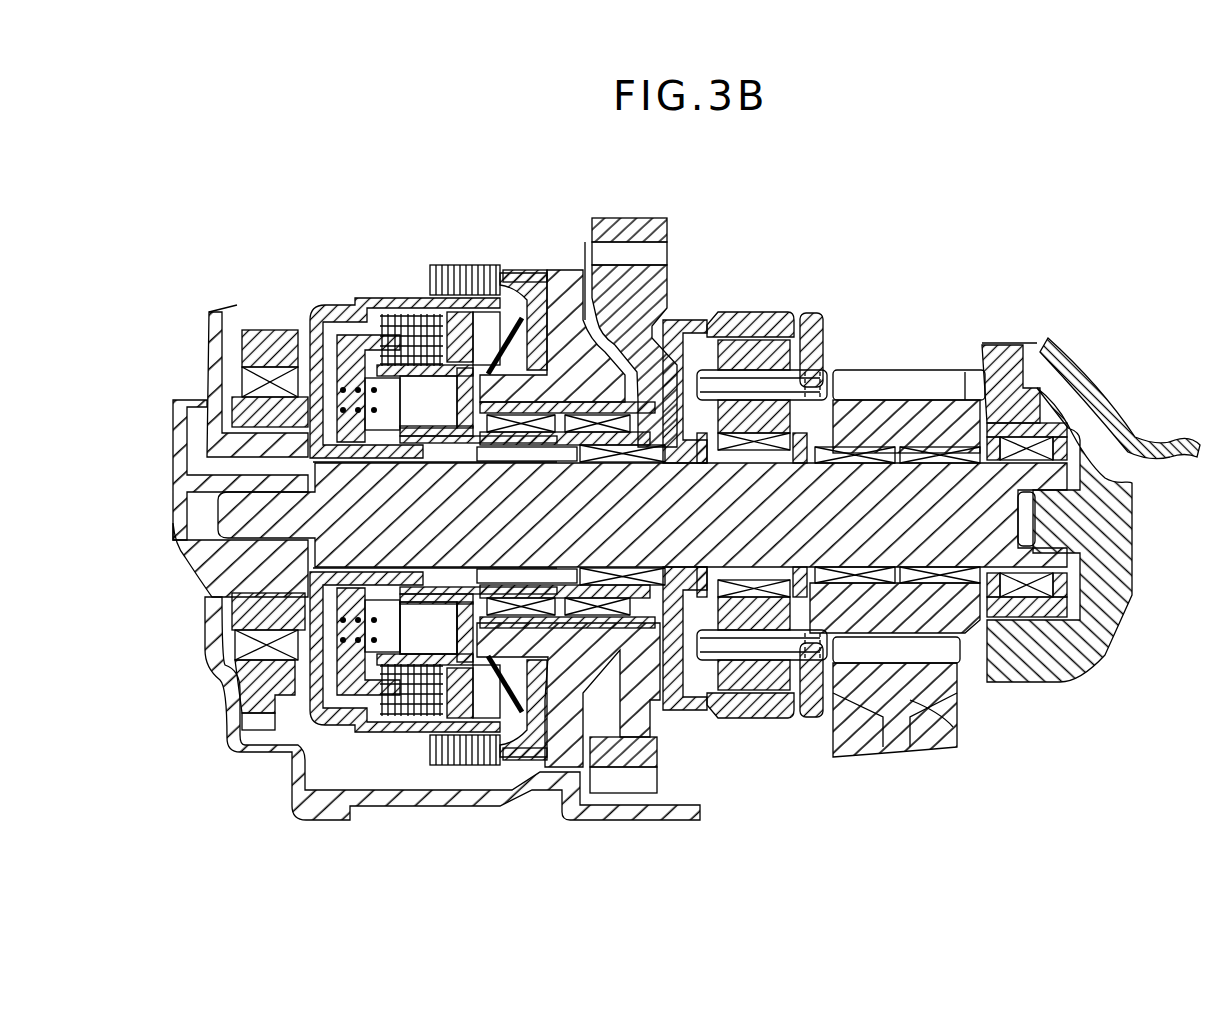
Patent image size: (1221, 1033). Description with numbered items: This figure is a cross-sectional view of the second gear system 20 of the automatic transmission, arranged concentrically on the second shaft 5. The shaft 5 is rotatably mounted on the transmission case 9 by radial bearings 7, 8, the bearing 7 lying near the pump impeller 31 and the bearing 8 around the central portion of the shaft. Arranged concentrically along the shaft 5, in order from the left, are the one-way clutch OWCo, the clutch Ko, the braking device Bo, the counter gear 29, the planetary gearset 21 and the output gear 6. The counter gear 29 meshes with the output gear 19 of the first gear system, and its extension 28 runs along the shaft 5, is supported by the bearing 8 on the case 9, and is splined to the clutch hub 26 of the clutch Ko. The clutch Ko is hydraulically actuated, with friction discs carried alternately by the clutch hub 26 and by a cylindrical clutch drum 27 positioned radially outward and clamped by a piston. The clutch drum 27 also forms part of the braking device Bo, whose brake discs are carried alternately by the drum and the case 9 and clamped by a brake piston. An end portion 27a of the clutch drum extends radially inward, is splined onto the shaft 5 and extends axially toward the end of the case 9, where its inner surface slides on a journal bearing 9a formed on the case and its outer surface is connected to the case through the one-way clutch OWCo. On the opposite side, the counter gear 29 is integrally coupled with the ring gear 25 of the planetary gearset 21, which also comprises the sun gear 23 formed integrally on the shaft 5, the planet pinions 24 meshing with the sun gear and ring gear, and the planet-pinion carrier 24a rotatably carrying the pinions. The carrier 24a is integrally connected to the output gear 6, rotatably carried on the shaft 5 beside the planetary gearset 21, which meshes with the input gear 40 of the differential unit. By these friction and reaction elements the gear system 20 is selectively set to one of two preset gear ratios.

The second rotatable shaft 5 is at (596, 533).
The transmission output gear 6 is at (935, 420).
The radial bearing 7 is at (1063, 627).
The radial bearing 8 is at (548, 630).
The transmission case 9 is at (1097, 625).
The journal bearing 9a is at (205, 568).
The output gear 19 is at (655, 225).
The second gear system 20 is at (632, 828).
The planetary gearset 21 is at (744, 722).
The sun gear 23 is at (738, 448).
The planet pinions 24 is at (744, 350).
The planet-pinion carrier 24a is at (828, 352).
The ring gear 25 is at (772, 313).
The clutch hub 26 is at (428, 628).
The clutch drum 27 is at (408, 735).
The end portion 27a is at (345, 722).
The extension 28 is at (548, 440).
The counter gear 29 is at (640, 286).
The pump impeller 31 is at (1110, 382).
The input gear 40 is at (940, 722).
The clutch Ko is at (395, 742).
The braking device Bo is at (490, 772).
The one-way clutch OWCo is at (244, 648).